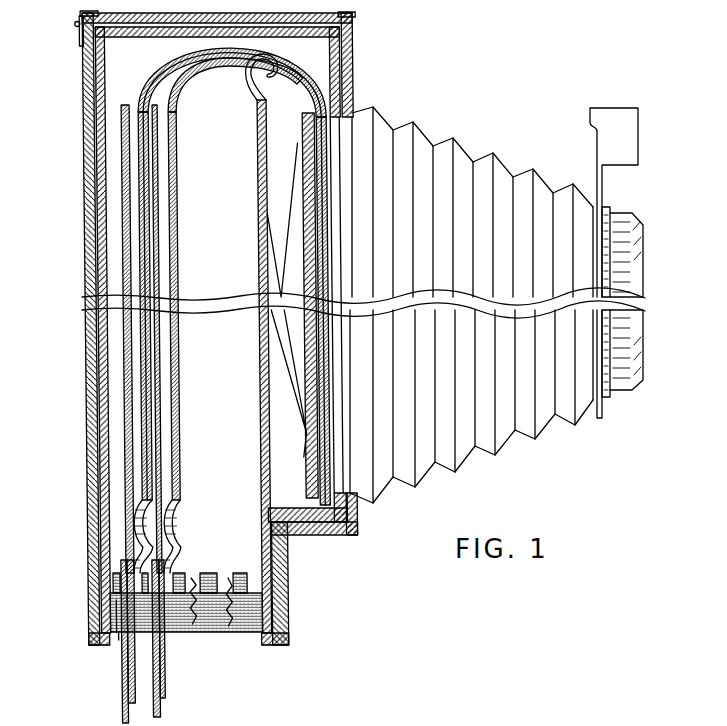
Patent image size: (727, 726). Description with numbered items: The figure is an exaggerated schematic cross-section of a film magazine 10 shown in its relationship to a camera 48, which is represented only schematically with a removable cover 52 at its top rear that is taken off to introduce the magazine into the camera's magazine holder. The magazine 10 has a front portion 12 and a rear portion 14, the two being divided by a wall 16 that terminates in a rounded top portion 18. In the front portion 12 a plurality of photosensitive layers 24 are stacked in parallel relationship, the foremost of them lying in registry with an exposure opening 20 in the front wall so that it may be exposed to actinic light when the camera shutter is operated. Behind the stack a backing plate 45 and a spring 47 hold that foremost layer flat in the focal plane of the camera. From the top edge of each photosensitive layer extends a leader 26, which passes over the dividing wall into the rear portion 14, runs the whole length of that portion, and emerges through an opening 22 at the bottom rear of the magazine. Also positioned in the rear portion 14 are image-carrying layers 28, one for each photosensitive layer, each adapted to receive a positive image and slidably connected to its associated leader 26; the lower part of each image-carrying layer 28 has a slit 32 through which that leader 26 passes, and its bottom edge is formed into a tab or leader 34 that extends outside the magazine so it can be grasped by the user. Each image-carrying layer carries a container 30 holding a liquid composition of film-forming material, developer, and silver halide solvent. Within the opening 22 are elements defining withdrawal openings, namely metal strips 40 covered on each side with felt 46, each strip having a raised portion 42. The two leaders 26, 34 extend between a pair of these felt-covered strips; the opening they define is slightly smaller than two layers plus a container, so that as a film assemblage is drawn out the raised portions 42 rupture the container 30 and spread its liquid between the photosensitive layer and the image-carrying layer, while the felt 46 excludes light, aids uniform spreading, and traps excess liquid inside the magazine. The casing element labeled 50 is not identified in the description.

The magazine 10 is at (303, 528).
The front portion 12 is at (311, 57).
The rear portion 14 is at (167, 50).
The wall 16 is at (256, 100).
The rounded top portion 18 is at (272, 73).
The exposure opening 20 is at (340, 366).
The opening 22 is at (212, 634).
The photosensitive layers 24 is at (317, 238).
The leader 26 is at (317, 73).
The image-carrying layer 28 is at (152, 195).
The container 30 is at (160, 502).
The slit 32 is at (163, 538).
The leader 34 is at (130, 685).
The metal strip 40 is at (176, 633).
The raised portion 42 is at (167, 570).
The backing plate 45 is at (306, 388).
The felt 46 is at (112, 640).
The spring 47 is at (300, 205).
The camera 48 is at (503, 437).
The outer casing 50 is at (82, 162).
The cover 52 is at (132, 20).